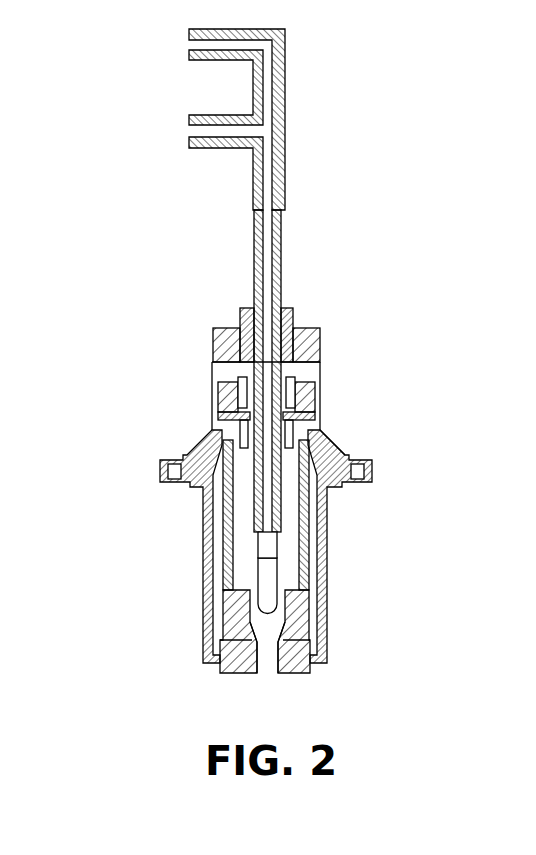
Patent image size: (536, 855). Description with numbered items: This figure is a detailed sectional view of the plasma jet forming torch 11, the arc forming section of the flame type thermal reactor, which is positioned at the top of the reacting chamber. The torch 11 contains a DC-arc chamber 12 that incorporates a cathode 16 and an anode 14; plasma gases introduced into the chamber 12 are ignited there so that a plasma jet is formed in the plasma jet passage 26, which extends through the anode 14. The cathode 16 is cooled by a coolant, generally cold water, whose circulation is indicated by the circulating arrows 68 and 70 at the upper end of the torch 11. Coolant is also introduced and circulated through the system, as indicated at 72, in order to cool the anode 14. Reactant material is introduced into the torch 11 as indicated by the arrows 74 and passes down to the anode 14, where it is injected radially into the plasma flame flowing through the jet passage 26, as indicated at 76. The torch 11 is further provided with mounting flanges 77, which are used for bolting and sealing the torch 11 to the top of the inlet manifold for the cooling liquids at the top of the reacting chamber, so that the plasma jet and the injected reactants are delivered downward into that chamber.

The plasma jet forming torch 11 is at (352, 503).
The DC-arc chamber 12 is at (283, 568).
The anode 14 is at (327, 613).
The cathode 16 is at (270, 537).
The plasma jet passage 26 is at (262, 650).
The circulating arrow (coolant flow to cathode) 68 is at (176, 43).
The circulating arrow (coolant flow from cathode) 70 is at (178, 128).
The coolant introduction (anode cooling) 72 is at (196, 432).
The reactant introduction arrows 74 is at (339, 431).
The radial reactant injection 76 is at (273, 650).
The mounting flanges 77 is at (372, 459).